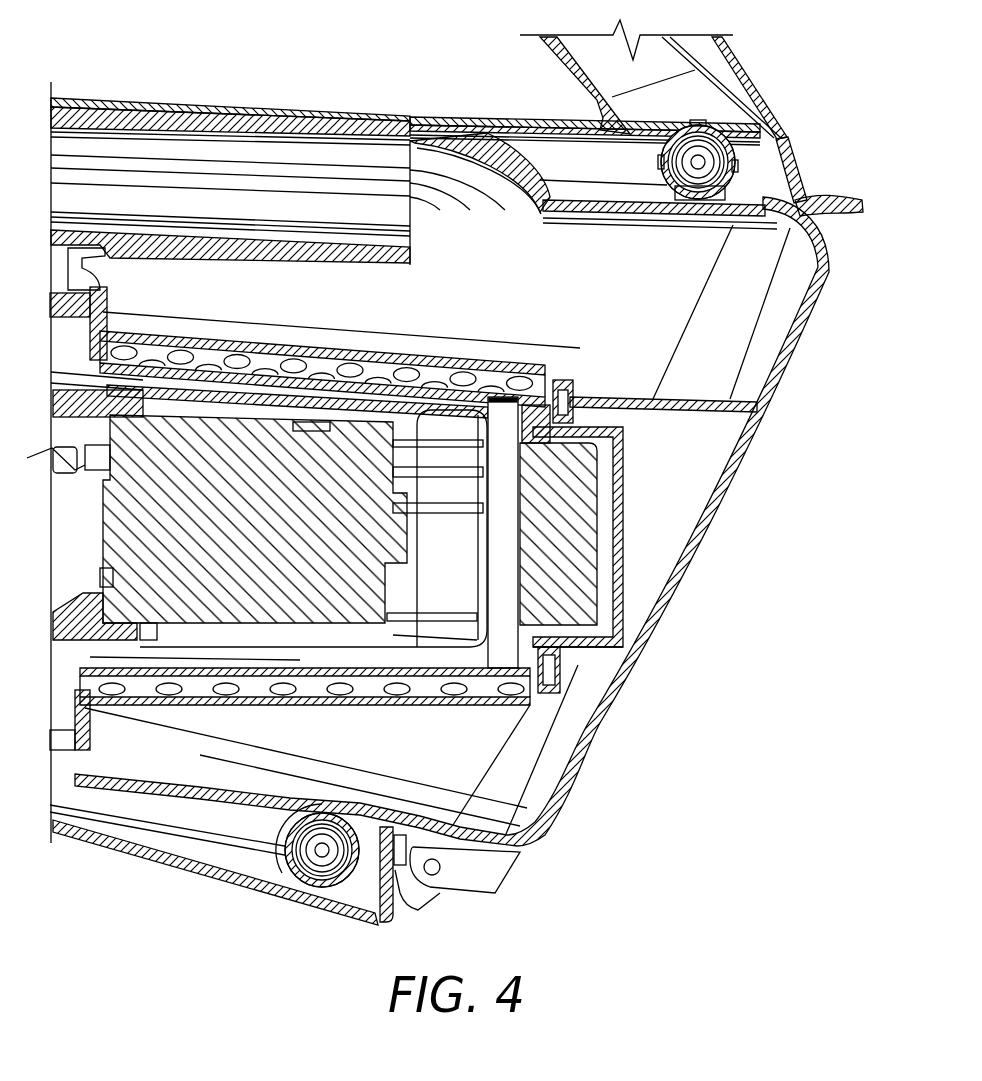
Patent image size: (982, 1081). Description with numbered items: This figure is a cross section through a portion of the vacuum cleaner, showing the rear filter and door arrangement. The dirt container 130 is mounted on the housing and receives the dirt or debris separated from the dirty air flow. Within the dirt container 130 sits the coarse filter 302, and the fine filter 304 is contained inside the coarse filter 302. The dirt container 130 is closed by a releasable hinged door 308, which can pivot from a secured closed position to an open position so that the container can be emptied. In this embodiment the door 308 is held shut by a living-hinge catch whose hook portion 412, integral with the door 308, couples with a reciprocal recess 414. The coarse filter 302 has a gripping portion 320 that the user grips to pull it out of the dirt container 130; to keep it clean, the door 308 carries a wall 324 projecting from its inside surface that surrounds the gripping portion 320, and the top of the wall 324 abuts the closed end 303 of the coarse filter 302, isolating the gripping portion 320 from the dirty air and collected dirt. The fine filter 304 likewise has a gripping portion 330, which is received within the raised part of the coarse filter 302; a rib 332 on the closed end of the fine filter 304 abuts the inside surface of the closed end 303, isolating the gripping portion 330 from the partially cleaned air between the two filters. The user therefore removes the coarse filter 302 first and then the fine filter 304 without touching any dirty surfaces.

The dirt container 130 is at (247, 767).
The coarse filter 302 is at (163, 703).
The closed end of the coarse filter 303 is at (563, 380).
The fine filter 304 is at (397, 705).
The door 308 is at (596, 647).
The gripping portion 320 is at (620, 492).
The wall 324 is at (672, 400).
The gripping portion 330 is at (577, 553).
The rib 332 is at (540, 692).
The hook portion 412 is at (777, 203).
The recess 414 is at (810, 198).